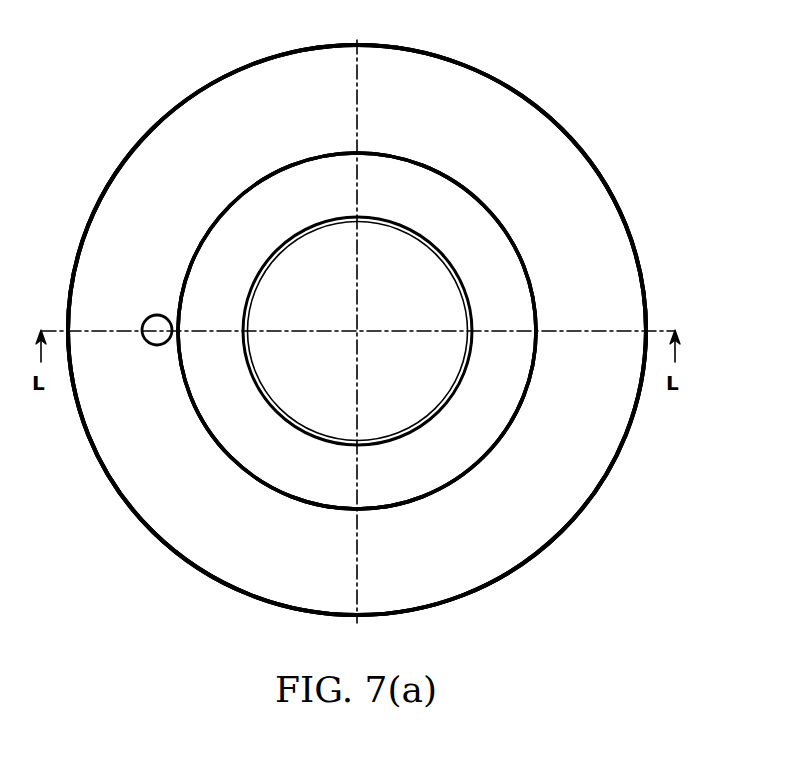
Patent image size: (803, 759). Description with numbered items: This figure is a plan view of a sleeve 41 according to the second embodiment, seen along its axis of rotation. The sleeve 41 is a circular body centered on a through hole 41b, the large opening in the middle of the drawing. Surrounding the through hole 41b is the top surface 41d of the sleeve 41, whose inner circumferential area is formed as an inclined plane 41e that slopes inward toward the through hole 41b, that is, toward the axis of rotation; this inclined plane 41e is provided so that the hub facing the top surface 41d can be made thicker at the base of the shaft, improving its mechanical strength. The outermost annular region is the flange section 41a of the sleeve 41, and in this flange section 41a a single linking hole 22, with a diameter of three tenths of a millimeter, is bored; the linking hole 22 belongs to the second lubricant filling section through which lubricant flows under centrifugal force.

The linking hole 22 is at (155, 318).
The sleeve 41 is at (490, 72).
The flange section 41a is at (520, 514).
The through hole 41b is at (397, 274).
The top surface 41d is at (357, 330).
The inclined plane 41e is at (265, 448).